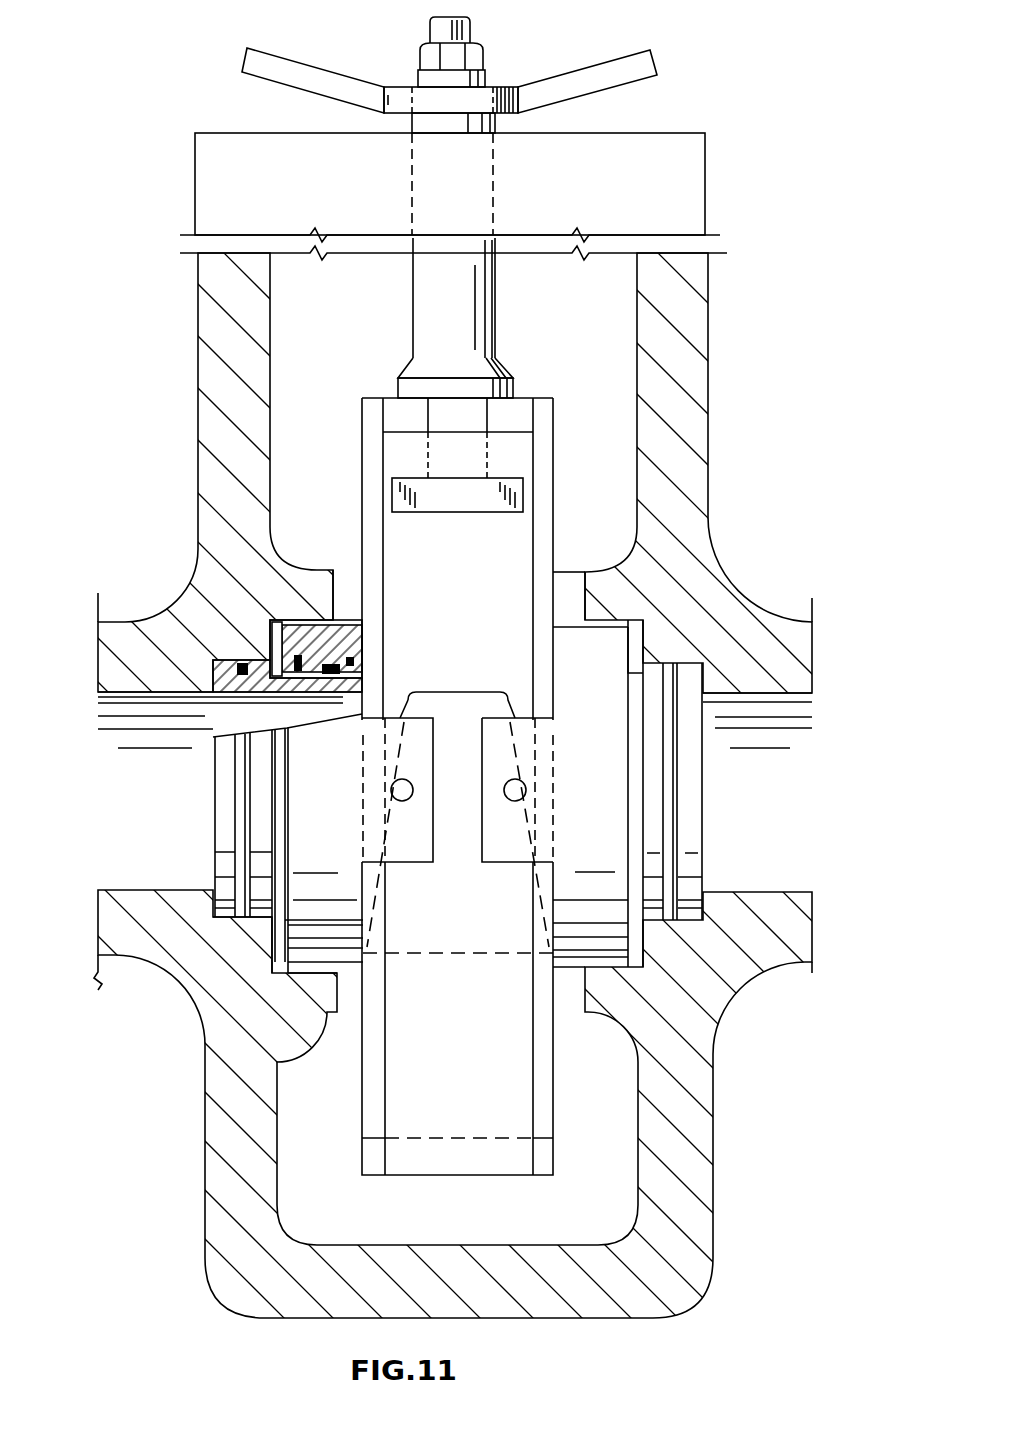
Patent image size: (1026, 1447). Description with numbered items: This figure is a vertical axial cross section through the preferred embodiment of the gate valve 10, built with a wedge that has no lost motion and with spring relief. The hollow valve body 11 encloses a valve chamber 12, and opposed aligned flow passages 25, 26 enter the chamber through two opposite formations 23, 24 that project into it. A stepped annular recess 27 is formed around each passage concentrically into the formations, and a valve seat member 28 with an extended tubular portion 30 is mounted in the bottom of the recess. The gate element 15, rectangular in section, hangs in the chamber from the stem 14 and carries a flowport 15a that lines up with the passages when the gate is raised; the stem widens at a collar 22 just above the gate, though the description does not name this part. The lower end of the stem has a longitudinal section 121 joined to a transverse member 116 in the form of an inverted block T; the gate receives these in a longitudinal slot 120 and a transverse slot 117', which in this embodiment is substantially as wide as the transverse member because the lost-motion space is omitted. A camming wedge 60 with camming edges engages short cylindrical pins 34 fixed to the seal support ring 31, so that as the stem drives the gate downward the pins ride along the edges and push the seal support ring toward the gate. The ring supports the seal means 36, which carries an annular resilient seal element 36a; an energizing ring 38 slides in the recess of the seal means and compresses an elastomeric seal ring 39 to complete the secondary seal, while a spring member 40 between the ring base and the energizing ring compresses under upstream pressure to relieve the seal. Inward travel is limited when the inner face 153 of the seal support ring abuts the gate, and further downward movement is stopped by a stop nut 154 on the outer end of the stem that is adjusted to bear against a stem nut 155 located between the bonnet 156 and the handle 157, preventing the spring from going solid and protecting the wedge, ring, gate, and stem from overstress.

The gate valve 10 is at (726, 277).
The valve body 11 is at (708, 470).
The valve chamber 12 is at (646, 316).
The stem 14 is at (458, 14).
The gate element 15 is at (521, 406).
The flowport 15a is at (446, 955).
The stem collar 22 is at (406, 362).
The formation 23 is at (330, 620).
The formation 24 is at (557, 573).
The flow passage 25 is at (122, 888).
The flow passage 26 is at (770, 890).
The stepped annular recess 27 is at (613, 630).
The valve seat member 28 is at (362, 686).
The extended tubular portion 30 is at (352, 690).
The seal support ring 31 is at (360, 625).
The cylindrical pin 34 is at (508, 790).
The seal means 36 is at (572, 683).
The resilient seal element 36a is at (362, 667).
The energizing ring 38 is at (330, 672).
The seal ring 39 is at (323, 620).
The spring member 40 is at (268, 648).
The camming wedge 60 is at (453, 542).
The transverse member 116 is at (520, 494).
The transverse slot 117' is at (520, 455).
The longitudinal slot 120 is at (490, 432).
The longitudinal section 121 is at (428, 410).
The inner face 153 is at (360, 632).
The stop nut 154 is at (433, 44).
The stem nut 155 is at (420, 76).
The bonnet 156 is at (626, 133).
The handle 157 is at (575, 71).